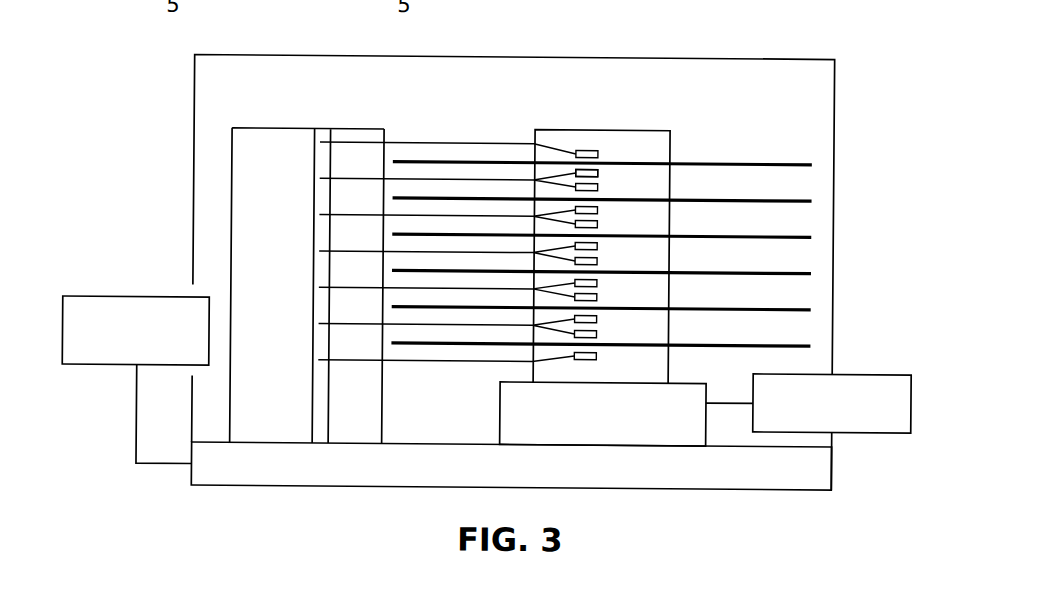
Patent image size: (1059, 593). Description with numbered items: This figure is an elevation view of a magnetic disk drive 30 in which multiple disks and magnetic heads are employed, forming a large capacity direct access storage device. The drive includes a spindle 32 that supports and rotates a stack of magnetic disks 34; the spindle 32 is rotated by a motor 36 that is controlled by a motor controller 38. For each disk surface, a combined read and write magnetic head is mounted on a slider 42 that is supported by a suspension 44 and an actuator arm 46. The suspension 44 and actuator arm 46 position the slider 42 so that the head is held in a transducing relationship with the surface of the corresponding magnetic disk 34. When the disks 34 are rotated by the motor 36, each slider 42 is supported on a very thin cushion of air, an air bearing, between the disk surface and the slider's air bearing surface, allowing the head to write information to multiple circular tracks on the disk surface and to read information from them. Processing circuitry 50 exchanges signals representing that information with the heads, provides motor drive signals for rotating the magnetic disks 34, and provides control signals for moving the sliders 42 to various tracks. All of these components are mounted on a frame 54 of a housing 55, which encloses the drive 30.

The magnetic disk drive 30 is at (718, 134).
The spindle 32 is at (658, 130).
The magnetic disk 34 is at (799, 164).
The motor 36 is at (592, 422).
The motor controller 38 is at (872, 430).
The slider 42 is at (598, 172).
The suspension 44 is at (570, 182).
The actuator arm 46 is at (500, 178).
The processing circuitry 50 is at (108, 300).
The frame 54 is at (250, 480).
The housing 55 is at (771, 57).